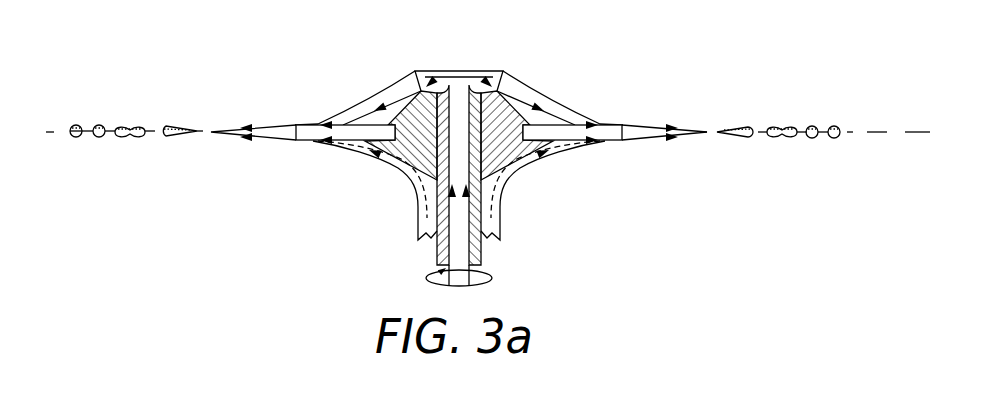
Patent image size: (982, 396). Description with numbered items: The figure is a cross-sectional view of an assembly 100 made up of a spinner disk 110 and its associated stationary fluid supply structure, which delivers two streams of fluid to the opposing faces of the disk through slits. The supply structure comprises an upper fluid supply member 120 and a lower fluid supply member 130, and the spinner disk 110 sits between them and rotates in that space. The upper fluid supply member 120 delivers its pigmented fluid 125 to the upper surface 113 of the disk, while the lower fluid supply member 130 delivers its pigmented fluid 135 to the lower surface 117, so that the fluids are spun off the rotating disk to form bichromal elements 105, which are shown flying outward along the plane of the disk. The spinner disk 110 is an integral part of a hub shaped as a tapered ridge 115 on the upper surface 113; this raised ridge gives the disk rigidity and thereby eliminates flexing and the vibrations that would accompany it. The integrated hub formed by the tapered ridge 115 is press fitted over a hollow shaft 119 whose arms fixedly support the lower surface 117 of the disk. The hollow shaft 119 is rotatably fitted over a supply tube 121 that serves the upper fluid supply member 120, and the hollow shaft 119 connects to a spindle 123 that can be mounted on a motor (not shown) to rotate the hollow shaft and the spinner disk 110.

The assembly 100 is at (338, 49).
The bichromal elements 105 is at (785, 118).
The spinner disk 110 is at (565, 124).
The upper surface 113 is at (611, 126).
The tapered ridge 115 is at (397, 113).
The lower surface 117 is at (606, 142).
The hollow shaft 119 is at (378, 146).
The upper fluid supply member 120 is at (452, 71).
The supply tube 121 is at (449, 211).
The spindle 123 is at (483, 274).
The pigmented fluid 125 is at (433, 74).
The lower fluid supply member 130 is at (503, 208).
The pigmented fluid 135 is at (516, 170).